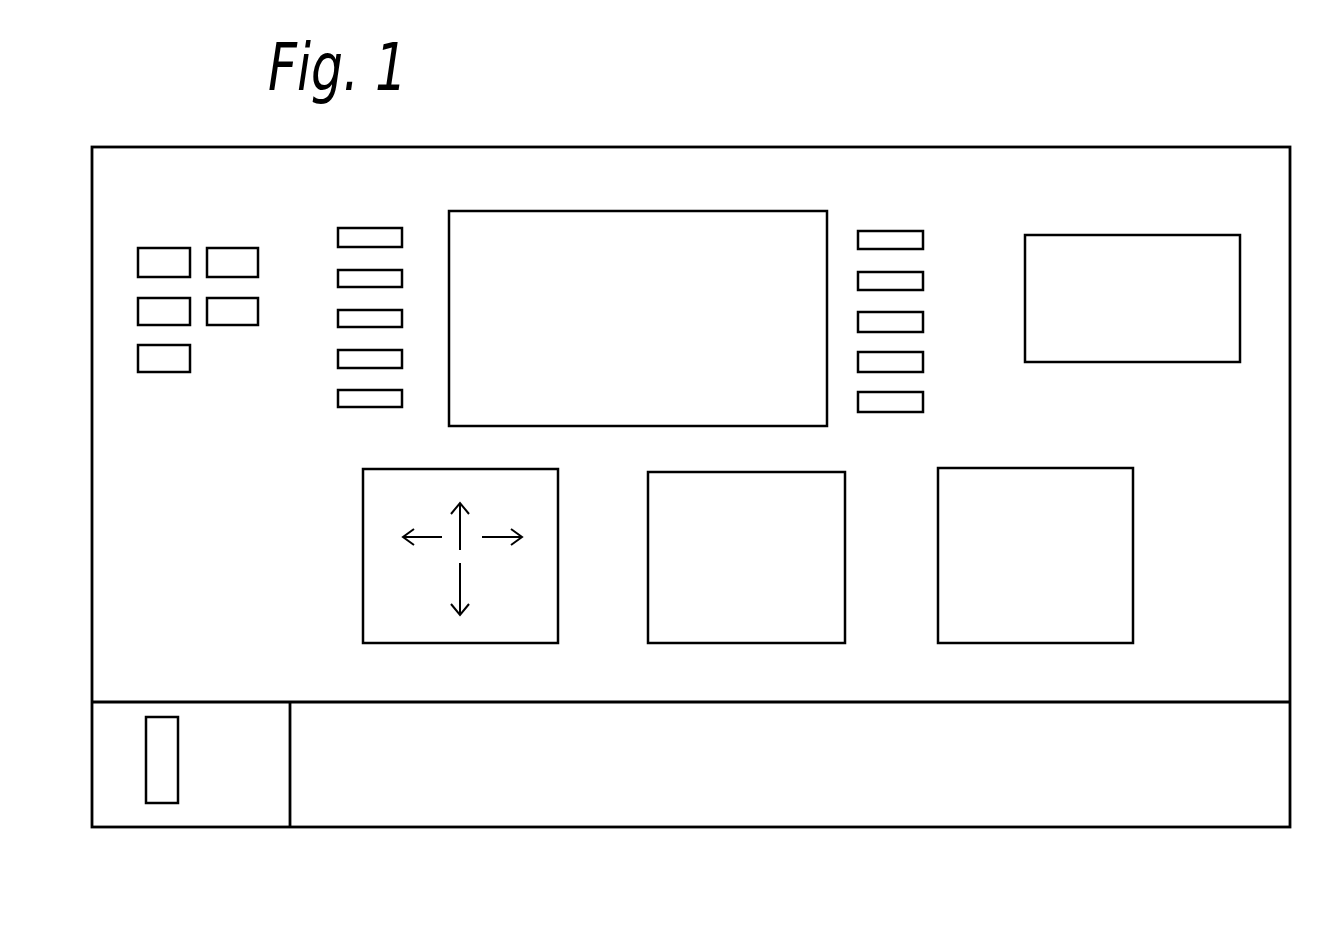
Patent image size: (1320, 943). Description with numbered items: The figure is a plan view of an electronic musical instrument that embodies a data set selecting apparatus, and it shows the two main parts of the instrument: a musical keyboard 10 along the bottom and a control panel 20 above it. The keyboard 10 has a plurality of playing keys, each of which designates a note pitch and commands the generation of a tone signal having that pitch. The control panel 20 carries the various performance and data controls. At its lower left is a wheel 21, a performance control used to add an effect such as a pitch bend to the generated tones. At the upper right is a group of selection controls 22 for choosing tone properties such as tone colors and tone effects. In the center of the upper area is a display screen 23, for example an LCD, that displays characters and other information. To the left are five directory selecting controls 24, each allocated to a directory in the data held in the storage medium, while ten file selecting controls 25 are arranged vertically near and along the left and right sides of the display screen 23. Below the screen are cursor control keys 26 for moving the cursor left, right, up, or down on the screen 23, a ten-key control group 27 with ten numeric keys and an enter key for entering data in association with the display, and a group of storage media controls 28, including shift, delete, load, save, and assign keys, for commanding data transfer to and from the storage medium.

The musical keyboard 10 is at (1053, 785).
The control panel 20 is at (277, 675).
The wheel 21 is at (180, 760).
The selection controls 22 is at (1065, 237).
The display screen 23 is at (722, 213).
The directory selecting controls 24 is at (210, 362).
The file selecting controls 25 is at (328, 287).
The cursor control keys 26 is at (485, 645).
The ten-key control group 27 is at (765, 645).
The storage media controls 28 is at (1060, 645).